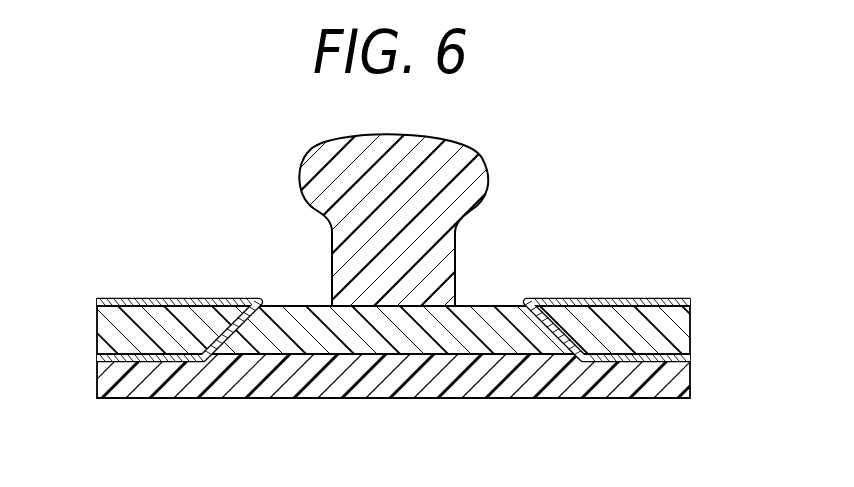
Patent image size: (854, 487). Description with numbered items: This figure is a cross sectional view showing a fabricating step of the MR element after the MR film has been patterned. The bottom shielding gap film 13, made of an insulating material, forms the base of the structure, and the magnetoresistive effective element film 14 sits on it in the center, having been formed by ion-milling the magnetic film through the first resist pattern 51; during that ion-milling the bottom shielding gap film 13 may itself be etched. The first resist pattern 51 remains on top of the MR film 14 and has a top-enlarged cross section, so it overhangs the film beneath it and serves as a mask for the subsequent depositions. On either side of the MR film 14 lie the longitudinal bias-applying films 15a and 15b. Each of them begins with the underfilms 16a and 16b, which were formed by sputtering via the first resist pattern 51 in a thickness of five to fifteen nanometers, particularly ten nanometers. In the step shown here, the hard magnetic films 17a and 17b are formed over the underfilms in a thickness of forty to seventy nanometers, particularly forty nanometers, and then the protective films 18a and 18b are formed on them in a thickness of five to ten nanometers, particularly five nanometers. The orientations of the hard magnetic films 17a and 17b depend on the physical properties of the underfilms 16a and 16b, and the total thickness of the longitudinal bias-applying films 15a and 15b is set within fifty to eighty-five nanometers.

The first resist pattern 51 is at (458, 187).
The bottom shielding gap film 13 is at (447, 375).
The magnetoresistive effective element film 14 is at (388, 323).
The longitudinal bias-applying film 15a is at (657, 342).
The longitudinal bias-applying film 15b is at (148, 340).
The underfilm 16a is at (620, 366).
The underfilm 16b is at (167, 363).
The hard magnetic film 17a is at (640, 335).
The hard magnetic film 17b is at (150, 335).
The protective film 18a is at (585, 302).
The protective film 18b is at (202, 302).